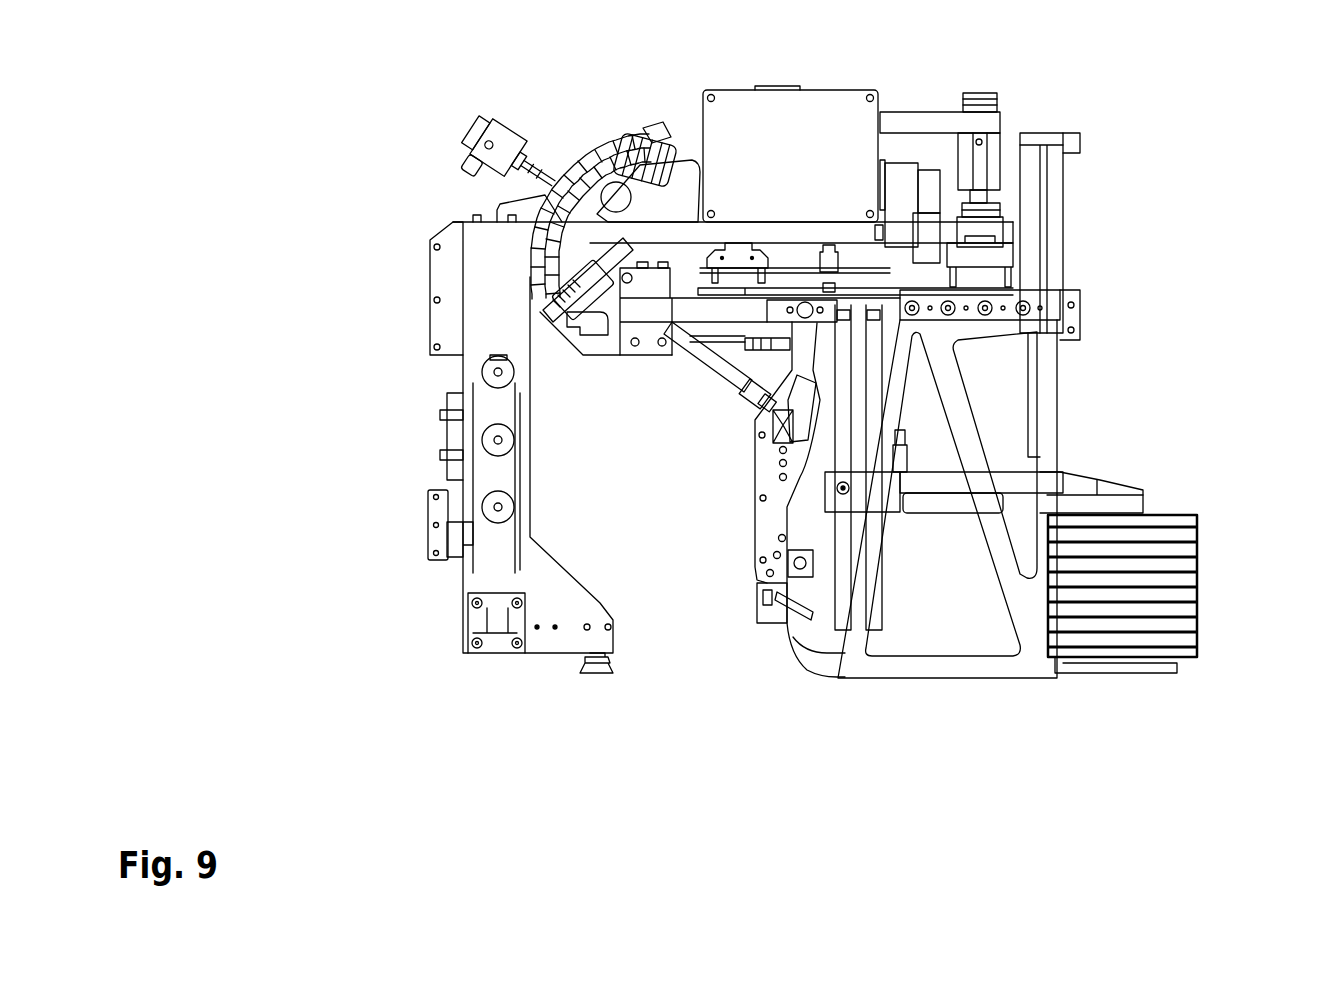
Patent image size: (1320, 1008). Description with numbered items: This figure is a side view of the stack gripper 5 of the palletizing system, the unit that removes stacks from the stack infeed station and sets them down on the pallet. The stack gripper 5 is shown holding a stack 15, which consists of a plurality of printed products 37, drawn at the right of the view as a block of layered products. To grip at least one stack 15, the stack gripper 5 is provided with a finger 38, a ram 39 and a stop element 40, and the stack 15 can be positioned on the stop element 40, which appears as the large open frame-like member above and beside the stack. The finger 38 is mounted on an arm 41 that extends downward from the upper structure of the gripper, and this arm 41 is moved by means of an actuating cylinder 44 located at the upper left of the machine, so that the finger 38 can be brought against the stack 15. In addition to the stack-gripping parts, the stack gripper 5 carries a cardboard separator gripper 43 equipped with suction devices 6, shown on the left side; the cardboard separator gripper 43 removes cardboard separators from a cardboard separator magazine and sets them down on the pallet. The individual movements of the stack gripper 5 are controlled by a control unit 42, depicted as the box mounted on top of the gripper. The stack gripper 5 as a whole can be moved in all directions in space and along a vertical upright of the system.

The stack gripper 5 is at (1075, 205).
The suction devices 6 is at (496, 508).
The stack 15 is at (1162, 515).
The printed products 37 is at (1140, 640).
The finger 38 is at (1095, 665).
The ram 39 is at (1073, 480).
The stop element 40 is at (1032, 640).
The arm 41 is at (752, 520).
The control unit 42 is at (752, 130).
The cardboard separator gripper 43 is at (428, 536).
The actuating cylinder 44 is at (518, 140).